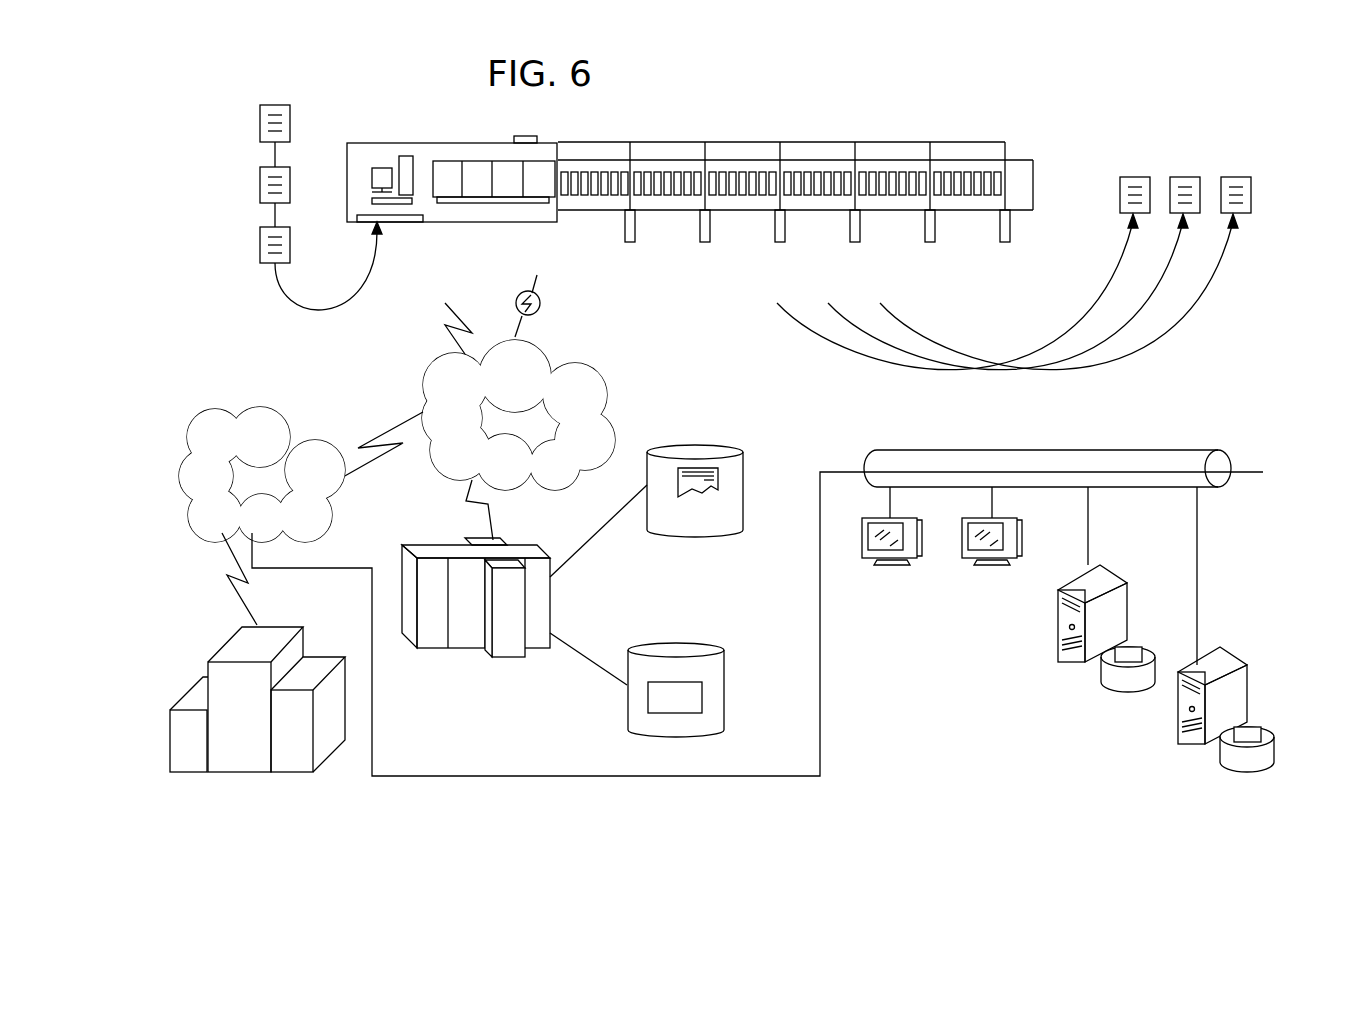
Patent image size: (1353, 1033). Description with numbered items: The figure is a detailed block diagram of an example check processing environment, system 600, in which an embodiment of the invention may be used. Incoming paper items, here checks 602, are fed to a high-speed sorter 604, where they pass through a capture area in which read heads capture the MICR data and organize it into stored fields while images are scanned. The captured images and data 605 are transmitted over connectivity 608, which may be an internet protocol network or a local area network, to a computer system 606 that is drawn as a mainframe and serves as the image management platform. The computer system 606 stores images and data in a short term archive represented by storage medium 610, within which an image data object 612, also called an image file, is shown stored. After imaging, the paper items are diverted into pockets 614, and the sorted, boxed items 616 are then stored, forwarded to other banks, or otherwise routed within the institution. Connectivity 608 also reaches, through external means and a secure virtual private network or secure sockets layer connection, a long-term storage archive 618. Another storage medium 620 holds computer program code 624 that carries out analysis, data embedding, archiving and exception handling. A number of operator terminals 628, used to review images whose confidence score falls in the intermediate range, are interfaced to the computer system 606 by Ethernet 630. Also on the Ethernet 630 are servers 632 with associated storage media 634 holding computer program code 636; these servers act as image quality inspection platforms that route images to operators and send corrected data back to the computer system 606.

The system 600 is at (280, 300).
The checks 602 is at (252, 103).
The high-speed sorter 604 is at (452, 142).
The data 605 is at (540, 312).
The computer system 606 is at (437, 650).
The connectivity 608 is at (615, 430).
The storage medium 610 is at (743, 512).
The image data object 612 is at (695, 472).
The pockets 614 is at (1002, 172).
The sorted, boxed items 616 is at (1206, 151).
The long-term storage archive 618 is at (315, 655).
The storage medium 620 is at (627, 708).
The computer program code 624 is at (675, 697).
The operator terminals 628 is at (915, 624).
The Ethernet 630 is at (283, 417).
The servers 632 is at (1110, 572).
The storage media 634 is at (1100, 677).
The computer program code 636 is at (1137, 647).